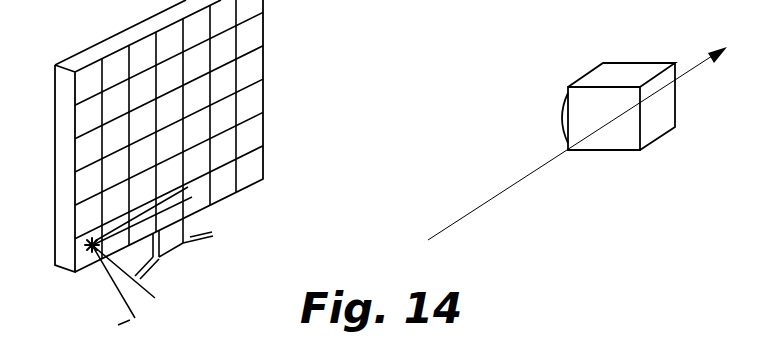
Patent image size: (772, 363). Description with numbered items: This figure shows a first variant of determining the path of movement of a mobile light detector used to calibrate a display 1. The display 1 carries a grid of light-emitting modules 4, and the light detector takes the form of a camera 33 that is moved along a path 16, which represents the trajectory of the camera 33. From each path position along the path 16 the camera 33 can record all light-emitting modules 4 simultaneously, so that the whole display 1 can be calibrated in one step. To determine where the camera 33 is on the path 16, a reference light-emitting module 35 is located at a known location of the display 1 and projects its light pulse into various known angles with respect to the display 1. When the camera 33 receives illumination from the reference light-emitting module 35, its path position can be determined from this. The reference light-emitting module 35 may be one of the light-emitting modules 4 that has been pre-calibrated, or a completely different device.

The display 1 is at (55, 140).
The light-emitting modules 4 is at (256, 163).
The reference light-emitting module 35 is at (83, 244).
The camera 33 is at (603, 150).
The path 16 is at (483, 204).